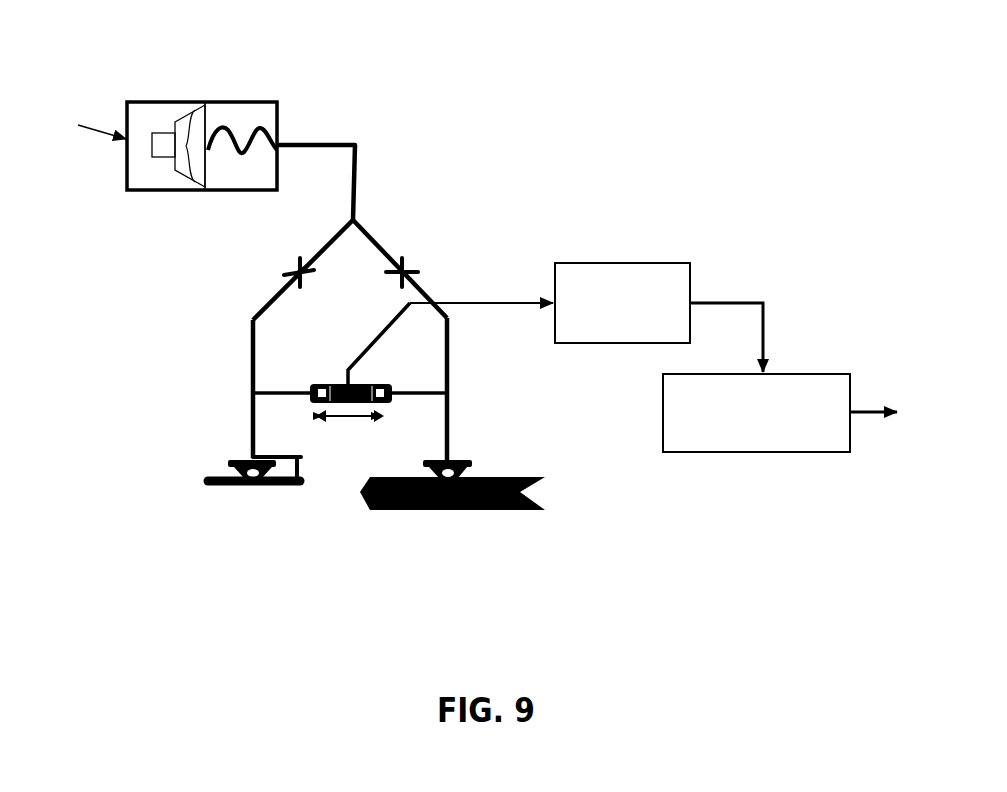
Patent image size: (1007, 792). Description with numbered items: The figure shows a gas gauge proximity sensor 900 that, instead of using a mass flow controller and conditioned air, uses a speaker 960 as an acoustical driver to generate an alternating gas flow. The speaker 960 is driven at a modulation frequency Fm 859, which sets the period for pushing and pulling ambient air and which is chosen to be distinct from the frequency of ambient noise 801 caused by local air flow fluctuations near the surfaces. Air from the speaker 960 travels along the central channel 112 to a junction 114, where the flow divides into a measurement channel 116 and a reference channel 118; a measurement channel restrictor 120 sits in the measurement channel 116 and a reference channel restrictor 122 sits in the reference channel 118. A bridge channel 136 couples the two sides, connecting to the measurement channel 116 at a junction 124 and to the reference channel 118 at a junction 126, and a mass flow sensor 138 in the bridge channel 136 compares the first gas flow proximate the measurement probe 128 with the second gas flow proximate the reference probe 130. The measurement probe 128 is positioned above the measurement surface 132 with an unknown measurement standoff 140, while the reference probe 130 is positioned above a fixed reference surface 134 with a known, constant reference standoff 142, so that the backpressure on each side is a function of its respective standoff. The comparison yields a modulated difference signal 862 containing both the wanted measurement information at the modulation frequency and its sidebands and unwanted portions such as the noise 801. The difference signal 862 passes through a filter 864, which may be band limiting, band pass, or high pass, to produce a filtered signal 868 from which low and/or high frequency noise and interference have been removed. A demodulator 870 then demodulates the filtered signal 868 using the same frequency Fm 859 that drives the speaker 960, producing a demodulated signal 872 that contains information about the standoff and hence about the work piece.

The speaker 960 is at (205, 102).
The modulation frequency Fm 859 is at (101, 121).
The central channel 112 is at (357, 173).
The junction 114 is at (352, 220).
The measurement channel 116 is at (320, 250).
The reference channel 118 is at (372, 238).
The measurement channel restrictor 120 is at (304, 279).
The reference channel restrictor 122 is at (412, 268).
The junction 124 is at (253, 392).
The junction 126 is at (447, 392).
The bridge channel 136 is at (290, 392).
The mass flow sensor 138 is at (333, 385).
The measurement probe 128 is at (238, 462).
The reference probe 130 is at (437, 462).
The measurement surface 132 is at (211, 486).
The reference surface 134 is at (358, 492).
The measurement standoff 140 is at (202, 472).
The reference standoff 142 is at (410, 469).
The ambient noise 801 is at (480, 467).
The difference signal 862 is at (523, 301).
The filter 864 is at (653, 263).
The filtered signal 868 is at (737, 302).
The demodulator 870 is at (798, 373).
The demodulated signal 872 is at (873, 409).
The sensor 900 is at (677, 127).